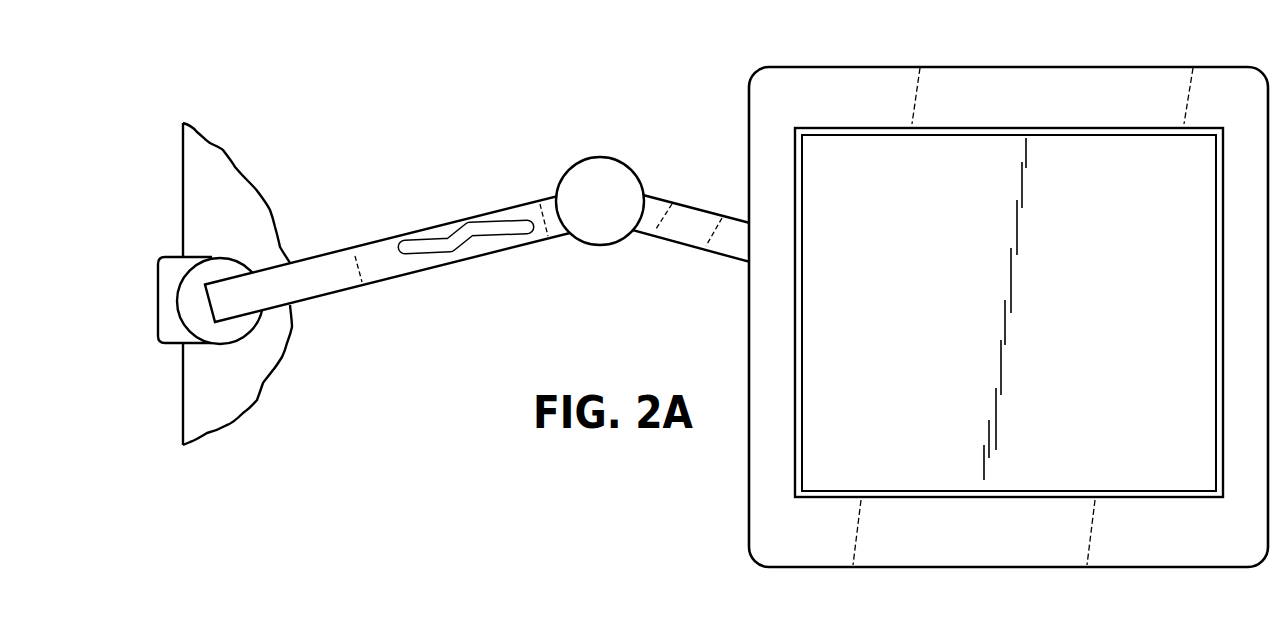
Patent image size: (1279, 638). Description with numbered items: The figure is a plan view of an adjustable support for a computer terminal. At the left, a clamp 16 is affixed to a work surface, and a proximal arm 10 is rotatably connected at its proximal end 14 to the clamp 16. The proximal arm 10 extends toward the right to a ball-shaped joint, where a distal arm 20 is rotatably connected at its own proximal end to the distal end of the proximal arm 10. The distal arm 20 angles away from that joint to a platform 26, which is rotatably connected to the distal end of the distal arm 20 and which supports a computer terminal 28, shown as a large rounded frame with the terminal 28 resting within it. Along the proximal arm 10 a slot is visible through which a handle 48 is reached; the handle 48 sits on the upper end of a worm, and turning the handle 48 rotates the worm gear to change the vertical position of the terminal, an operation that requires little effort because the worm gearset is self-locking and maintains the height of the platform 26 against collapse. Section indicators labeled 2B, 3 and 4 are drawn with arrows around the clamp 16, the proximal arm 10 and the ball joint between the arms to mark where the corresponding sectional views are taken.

The proximal arm 10 is at (467, 261).
The proximal end 14 is at (182, 318).
The clamp 16 is at (158, 292).
The distal arm 20 is at (733, 260).
The platform 26 is at (806, 66).
The computer terminal 28 is at (1073, 291).
The handle 48 is at (481, 229).
The section line 2B is at (537, 132).
The section line 3 is at (186, 282).
The section line 4 is at (258, 208).